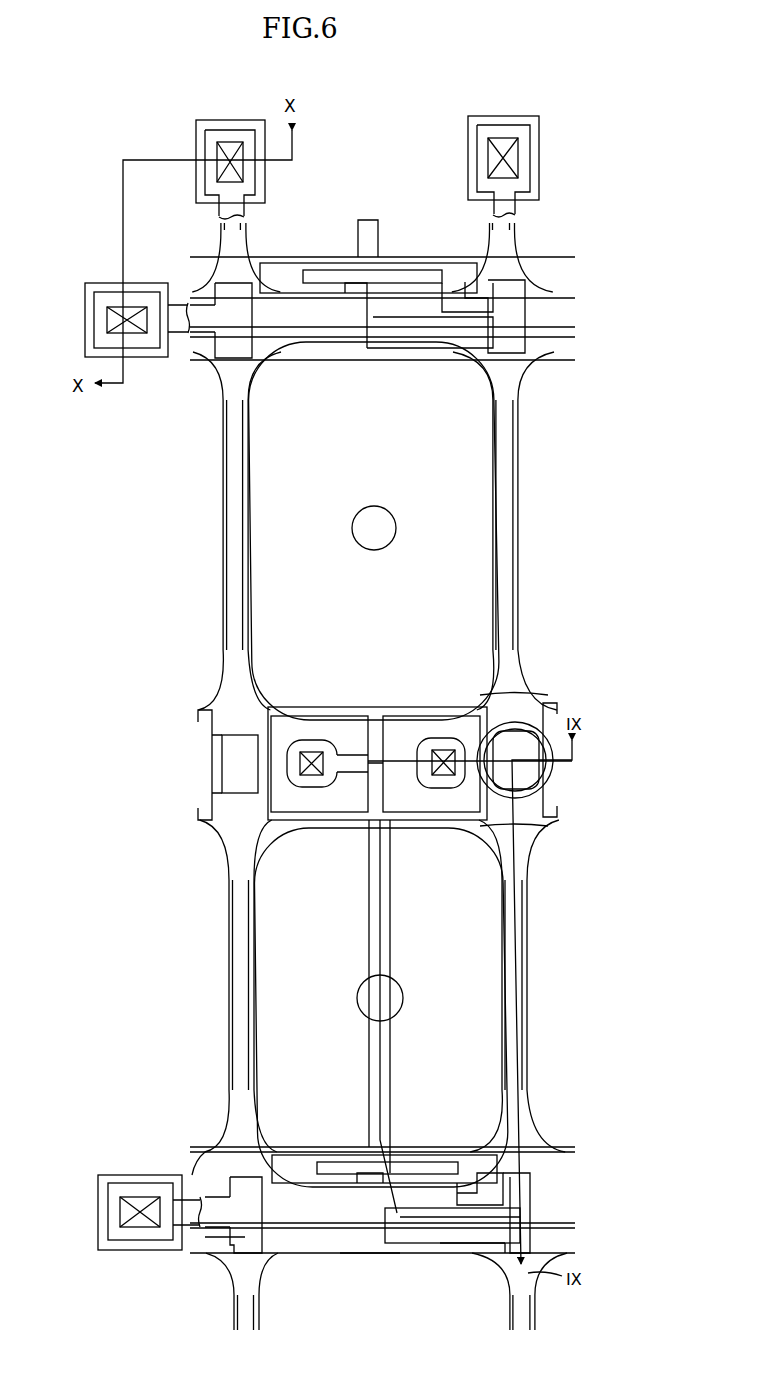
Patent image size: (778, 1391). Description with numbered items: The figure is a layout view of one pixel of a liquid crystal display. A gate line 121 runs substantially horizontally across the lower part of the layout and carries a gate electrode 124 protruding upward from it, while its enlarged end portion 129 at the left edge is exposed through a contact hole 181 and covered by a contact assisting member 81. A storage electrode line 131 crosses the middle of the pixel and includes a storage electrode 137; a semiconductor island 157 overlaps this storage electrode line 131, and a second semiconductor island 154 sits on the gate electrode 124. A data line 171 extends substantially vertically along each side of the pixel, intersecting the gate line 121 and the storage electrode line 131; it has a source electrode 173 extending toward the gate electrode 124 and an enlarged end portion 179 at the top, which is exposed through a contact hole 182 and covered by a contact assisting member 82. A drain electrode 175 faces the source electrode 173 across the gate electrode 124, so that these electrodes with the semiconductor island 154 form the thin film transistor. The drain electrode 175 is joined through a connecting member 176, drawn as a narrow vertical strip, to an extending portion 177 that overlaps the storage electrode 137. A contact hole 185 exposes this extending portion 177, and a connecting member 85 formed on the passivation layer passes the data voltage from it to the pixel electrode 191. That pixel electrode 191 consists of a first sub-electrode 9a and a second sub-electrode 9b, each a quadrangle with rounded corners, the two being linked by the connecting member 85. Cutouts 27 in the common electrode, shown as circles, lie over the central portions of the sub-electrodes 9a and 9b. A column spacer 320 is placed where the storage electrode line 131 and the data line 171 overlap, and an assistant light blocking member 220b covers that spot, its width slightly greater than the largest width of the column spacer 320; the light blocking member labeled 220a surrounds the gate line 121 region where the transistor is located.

The first sub-electrode 9a is at (548, 826).
The second sub-electrode 9b is at (548, 695).
The cutout 27 is at (396, 526).
The contact assisting member 81 is at (90, 283).
The contact assisting member 82 is at (539, 176).
The connecting member 85 is at (365, 737).
The gate line 121 is at (286, 1230).
The gate electrode 124 is at (363, 1157).
The end portion 129 is at (85, 298).
The storage electrode line 131 is at (240, 768).
The storage electrode 137 is at (305, 716).
The semiconductor island 154 is at (455, 1246).
The semiconductor island 157 is at (212, 793).
The data line 171 is at (512, 1010).
The source electrode 173 is at (420, 1246).
The drain electrode 175 is at (478, 1150).
The connecting member 176 is at (392, 934).
The extending portion 177 is at (318, 820).
The end portion 179 is at (539, 130).
The contact hole 181 is at (86, 326).
The contact hole 182 is at (502, 138).
The contact hole 185 is at (309, 752).
The pixel electrode 191 is at (600, 680).
The light blocking member 220a is at (226, 1146).
The assistant light blocking member 220b is at (478, 740).
The column spacer 320 is at (512, 800).